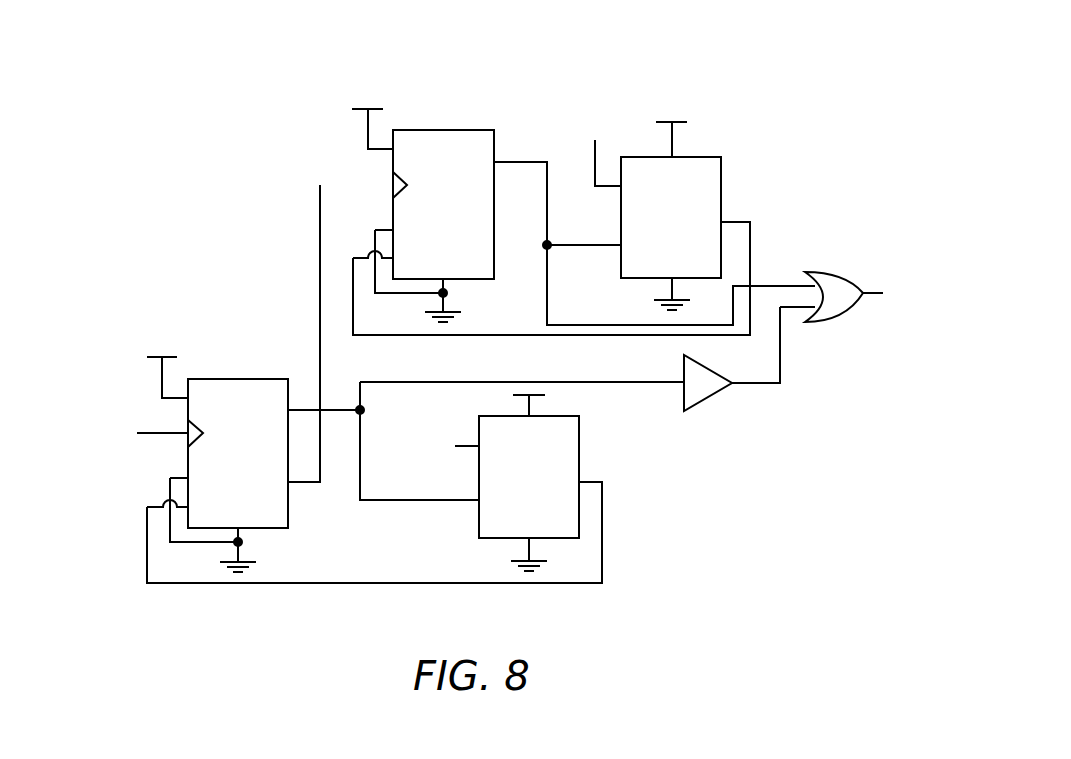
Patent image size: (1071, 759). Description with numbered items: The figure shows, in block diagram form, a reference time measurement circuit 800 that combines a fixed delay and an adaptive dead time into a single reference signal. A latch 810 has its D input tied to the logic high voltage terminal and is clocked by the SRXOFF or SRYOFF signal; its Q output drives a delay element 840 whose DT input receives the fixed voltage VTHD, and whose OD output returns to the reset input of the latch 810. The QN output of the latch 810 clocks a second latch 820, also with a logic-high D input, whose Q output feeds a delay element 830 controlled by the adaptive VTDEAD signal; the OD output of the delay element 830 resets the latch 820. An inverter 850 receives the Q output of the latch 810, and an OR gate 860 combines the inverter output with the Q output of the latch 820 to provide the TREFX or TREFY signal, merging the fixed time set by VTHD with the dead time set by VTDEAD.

The reference time measurement circuit 800 is at (242, 53).
The latch 810 is at (245, 379).
The latch 820 is at (455, 130).
The delay element 830 is at (700, 157).
The delay element 840 is at (579, 453).
The inverter 850 is at (705, 400).
The OR gate 860 is at (828, 322).